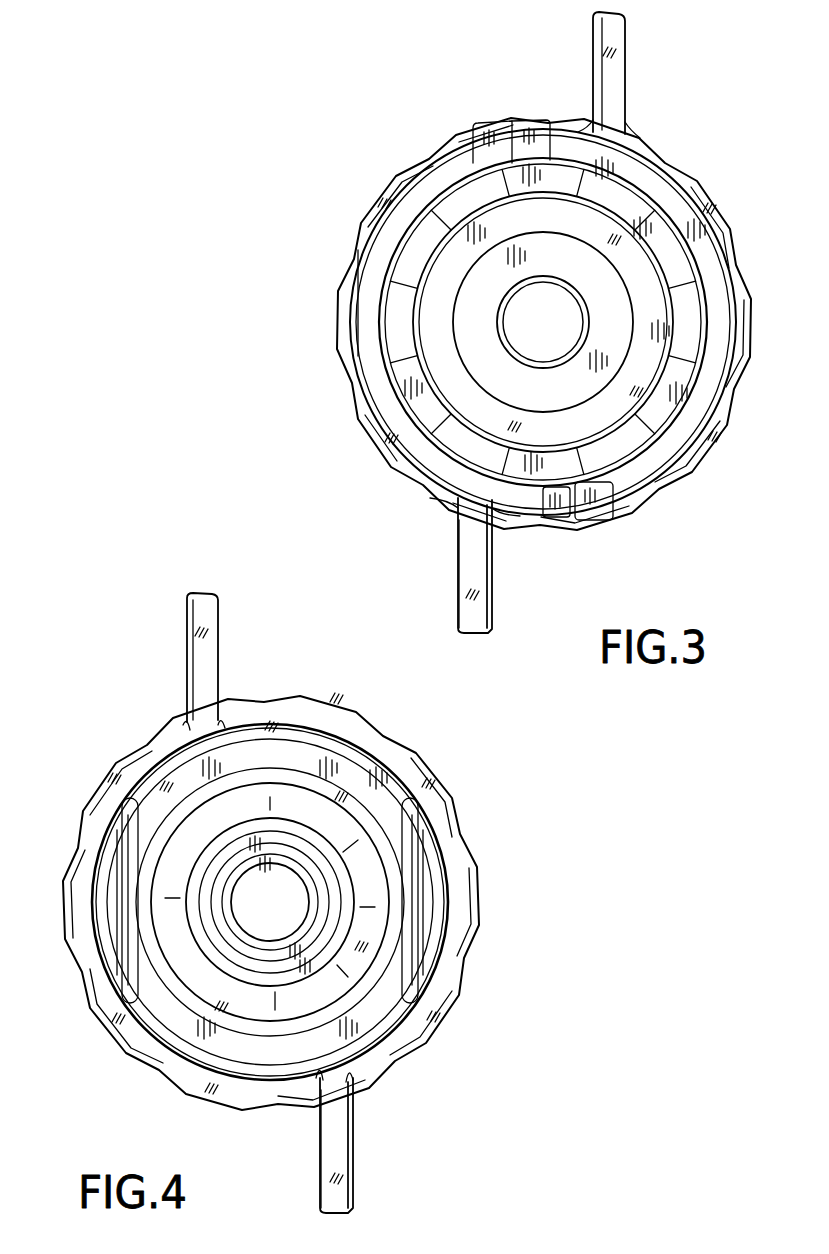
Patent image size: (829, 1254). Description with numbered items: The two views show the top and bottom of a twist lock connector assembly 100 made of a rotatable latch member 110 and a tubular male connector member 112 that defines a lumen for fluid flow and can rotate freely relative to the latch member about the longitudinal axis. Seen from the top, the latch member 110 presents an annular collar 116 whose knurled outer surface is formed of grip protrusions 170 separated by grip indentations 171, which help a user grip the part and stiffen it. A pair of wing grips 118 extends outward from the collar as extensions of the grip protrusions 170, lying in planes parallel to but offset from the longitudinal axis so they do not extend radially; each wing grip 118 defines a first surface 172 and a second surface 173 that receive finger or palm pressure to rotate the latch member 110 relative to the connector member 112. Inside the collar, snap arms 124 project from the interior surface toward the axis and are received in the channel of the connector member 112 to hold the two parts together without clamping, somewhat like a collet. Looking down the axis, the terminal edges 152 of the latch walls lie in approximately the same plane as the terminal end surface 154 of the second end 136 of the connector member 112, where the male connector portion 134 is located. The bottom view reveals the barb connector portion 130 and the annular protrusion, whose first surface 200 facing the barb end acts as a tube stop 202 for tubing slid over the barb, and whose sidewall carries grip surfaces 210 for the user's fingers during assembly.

In FIG. 3, the twist lock connector assembly 100 is at (314, 134).
In FIG. 4, the twist lock connector assembly 100 is at (80, 734).
In FIG. 3, the rotatable latch member 110 is at (272, 198).
In FIG. 4, the rotatable latch member 110 is at (55, 834).
In FIG. 3, the male connector member 112 is at (452, 338).
In FIG. 4, the male connector member 112 is at (130, 958).
In FIG. 3, the annular collar 116 is at (736, 266).
In FIG. 3, the wing grips 118 is at (626, 45).
In FIG. 4, the wing grips 118 is at (220, 618).
In FIG. 3, the snap arms 124 is at (678, 250).
In FIG. 4, the barb connector portion 130 is at (378, 893).
In FIG. 4, the male connector portion 134 is at (290, 912).
In FIG. 3, the second end 136 is at (615, 310).
In FIG. 3, the terminal edges 152 is at (390, 425).
In FIG. 3, the terminal end surface 154 is at (588, 385).
In FIG. 3, the grip protrusions 170 is at (452, 508).
In FIG. 3, the grip indentations 171 is at (356, 385).
In FIG. 3, the first surface 172 is at (458, 562).
In FIG. 4, the first surface 172 is at (320, 1184).
In FIG. 3, the second surface 173 is at (492, 557).
In FIG. 4, the second surface 173 is at (344, 1160).
In FIG. 4, the first surface 200 is at (380, 795).
In FIG. 4, the tube stop 202 is at (338, 768).
In FIG. 4, the grip surfaces 210 is at (434, 852).